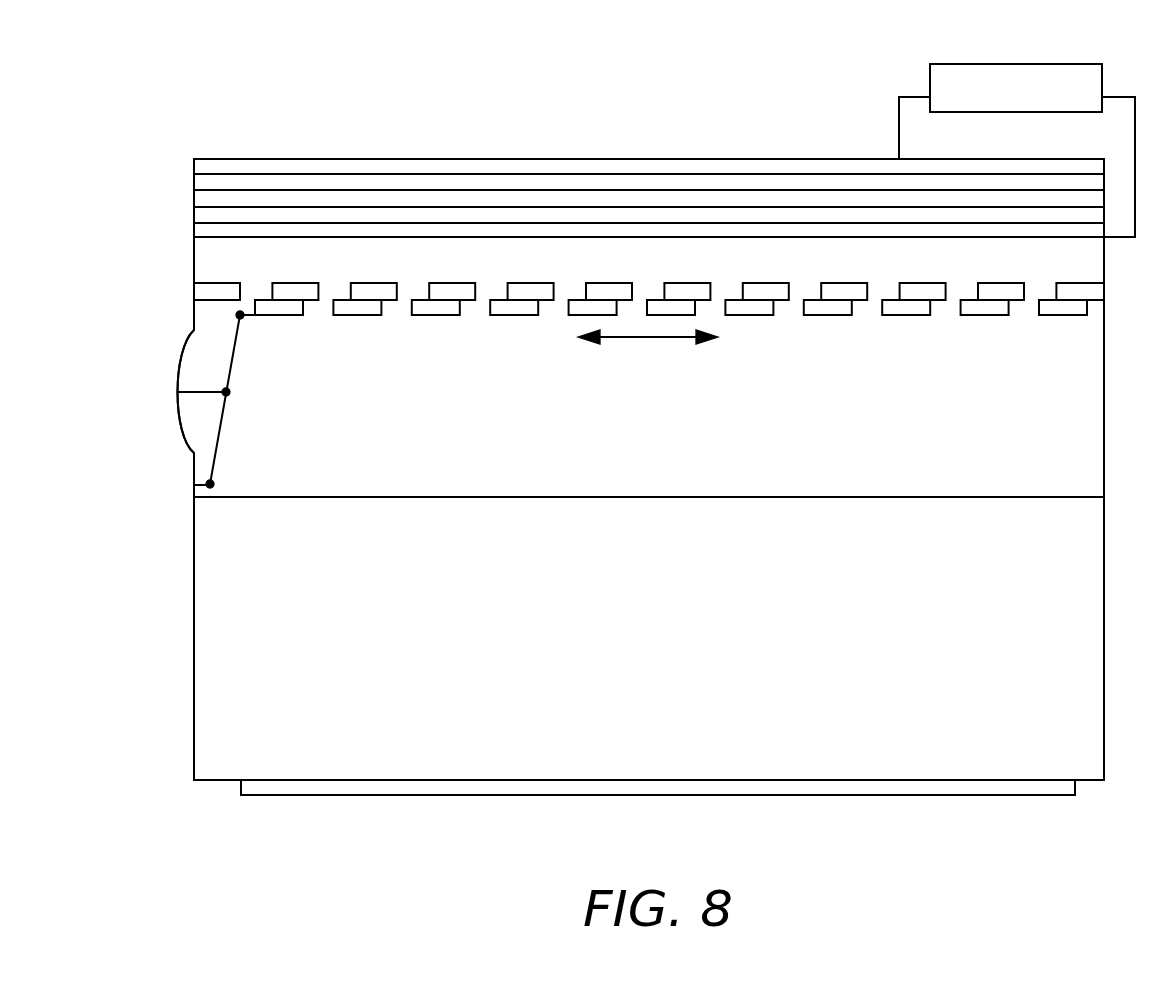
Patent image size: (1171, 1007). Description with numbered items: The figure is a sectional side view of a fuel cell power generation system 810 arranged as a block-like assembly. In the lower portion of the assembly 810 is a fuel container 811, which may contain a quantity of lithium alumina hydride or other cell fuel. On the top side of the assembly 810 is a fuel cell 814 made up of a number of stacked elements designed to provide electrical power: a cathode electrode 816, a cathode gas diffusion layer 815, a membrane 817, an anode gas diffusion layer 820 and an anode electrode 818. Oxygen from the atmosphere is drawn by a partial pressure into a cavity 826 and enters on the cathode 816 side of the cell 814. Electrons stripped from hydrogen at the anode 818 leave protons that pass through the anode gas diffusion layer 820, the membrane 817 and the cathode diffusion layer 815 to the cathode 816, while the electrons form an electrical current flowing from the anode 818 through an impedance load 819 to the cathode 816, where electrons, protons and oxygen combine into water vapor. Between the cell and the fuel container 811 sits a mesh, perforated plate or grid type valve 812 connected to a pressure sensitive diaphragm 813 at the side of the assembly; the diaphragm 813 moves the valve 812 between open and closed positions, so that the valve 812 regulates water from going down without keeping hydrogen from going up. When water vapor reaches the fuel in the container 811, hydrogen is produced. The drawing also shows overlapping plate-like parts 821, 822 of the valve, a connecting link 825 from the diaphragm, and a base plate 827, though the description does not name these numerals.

The fuel cell power generation system 810 is at (272, 90).
The fuel container 811 is at (667, 578).
The valve 812 is at (675, 304).
The pressure sensitive diaphragm 813 is at (177, 404).
The fuel cell 814 is at (619, 177).
The cathode gas diffusion layer 815 is at (448, 182).
The cathode electrode 816 is at (392, 167).
The membrane 817 is at (506, 198).
The anode electrode 818 is at (622, 231).
The impedance load 819 is at (1084, 64).
The anode gas diffusion layer 820 is at (565, 214).
The upper electrode 821 is at (300, 284).
The lower electrode 822 is at (363, 317).
The connection line 825 is at (237, 352).
The cavity 826 is at (667, 272).
The base plate 827 is at (658, 800).